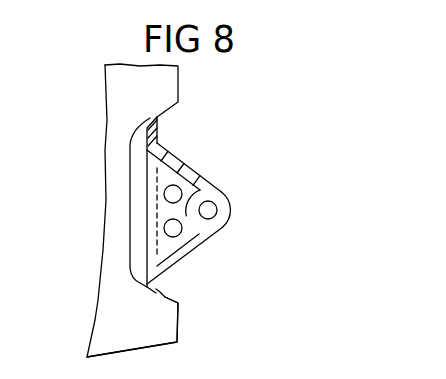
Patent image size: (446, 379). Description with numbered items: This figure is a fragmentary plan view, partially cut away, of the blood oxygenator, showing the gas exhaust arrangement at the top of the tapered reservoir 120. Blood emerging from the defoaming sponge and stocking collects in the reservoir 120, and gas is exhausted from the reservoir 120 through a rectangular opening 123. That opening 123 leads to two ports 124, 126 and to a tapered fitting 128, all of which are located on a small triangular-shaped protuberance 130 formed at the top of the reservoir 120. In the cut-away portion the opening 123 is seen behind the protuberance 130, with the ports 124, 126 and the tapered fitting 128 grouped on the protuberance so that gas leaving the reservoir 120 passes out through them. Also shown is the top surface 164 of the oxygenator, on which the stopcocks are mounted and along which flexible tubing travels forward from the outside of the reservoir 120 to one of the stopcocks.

The tapered reservoir 120 is at (133, 268).
The rectangular opening 123 is at (150, 247).
The port 124 is at (190, 185).
The port 126 is at (177, 236).
The tapered fitting 128 is at (213, 218).
The small triangular-shaped protuberance 130 is at (222, 196).
The top surface 164 is at (150, 320).